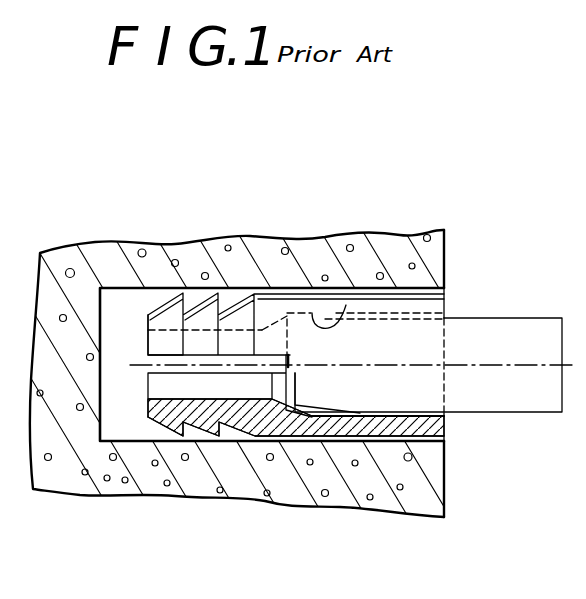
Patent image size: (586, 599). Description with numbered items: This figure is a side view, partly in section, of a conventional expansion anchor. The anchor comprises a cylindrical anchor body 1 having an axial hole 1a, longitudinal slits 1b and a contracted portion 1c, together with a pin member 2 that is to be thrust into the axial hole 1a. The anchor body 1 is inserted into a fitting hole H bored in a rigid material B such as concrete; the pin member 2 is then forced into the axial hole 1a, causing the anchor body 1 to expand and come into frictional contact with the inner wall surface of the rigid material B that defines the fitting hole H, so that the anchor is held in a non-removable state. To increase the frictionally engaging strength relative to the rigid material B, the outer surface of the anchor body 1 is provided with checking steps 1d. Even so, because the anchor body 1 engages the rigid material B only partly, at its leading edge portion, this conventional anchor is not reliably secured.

The anchor body 1 is at (283, 290).
The axial hole 1a is at (346, 305).
The longitudinal slits 1b is at (151, 356).
The contracted portion 1c is at (204, 337).
The checking steps 1d is at (205, 426).
The pin member 2 is at (505, 337).
The fitting hole H is at (445, 440).
The rigid material B is at (381, 485).